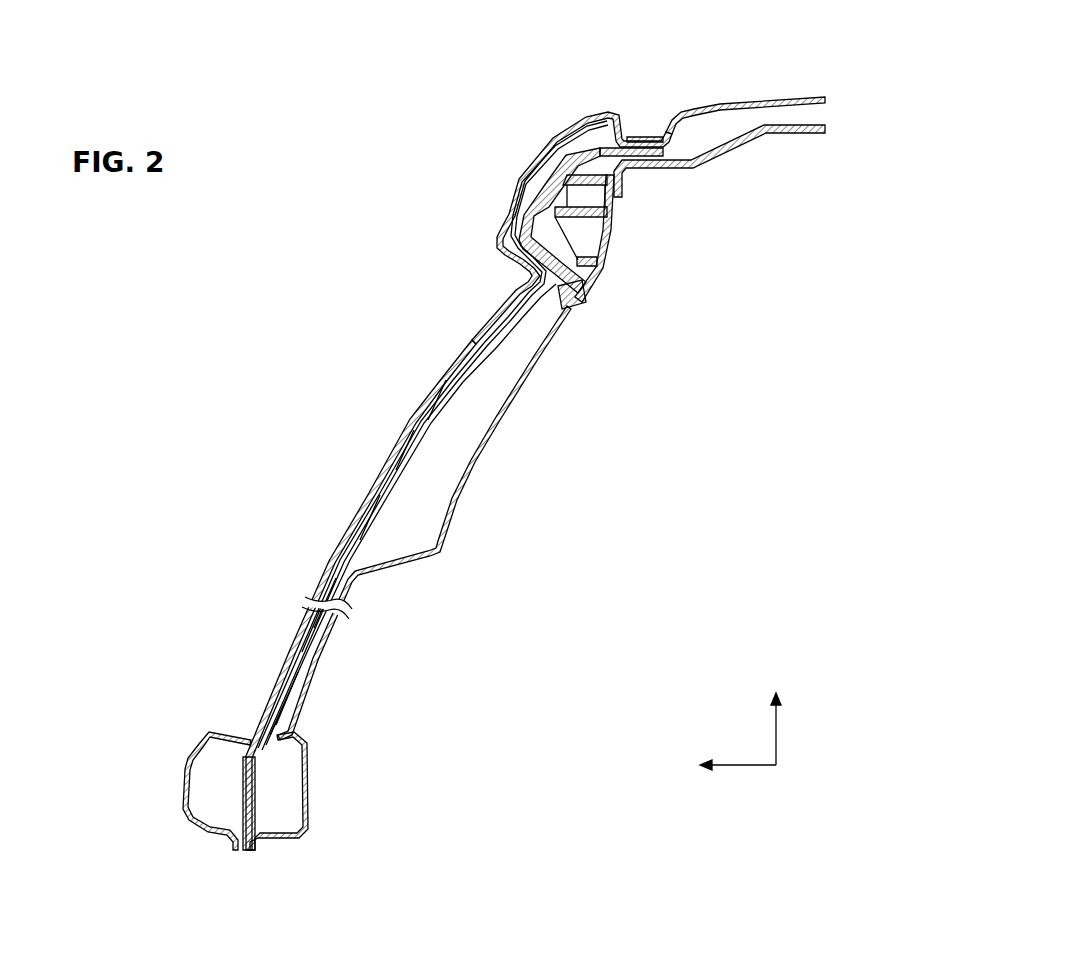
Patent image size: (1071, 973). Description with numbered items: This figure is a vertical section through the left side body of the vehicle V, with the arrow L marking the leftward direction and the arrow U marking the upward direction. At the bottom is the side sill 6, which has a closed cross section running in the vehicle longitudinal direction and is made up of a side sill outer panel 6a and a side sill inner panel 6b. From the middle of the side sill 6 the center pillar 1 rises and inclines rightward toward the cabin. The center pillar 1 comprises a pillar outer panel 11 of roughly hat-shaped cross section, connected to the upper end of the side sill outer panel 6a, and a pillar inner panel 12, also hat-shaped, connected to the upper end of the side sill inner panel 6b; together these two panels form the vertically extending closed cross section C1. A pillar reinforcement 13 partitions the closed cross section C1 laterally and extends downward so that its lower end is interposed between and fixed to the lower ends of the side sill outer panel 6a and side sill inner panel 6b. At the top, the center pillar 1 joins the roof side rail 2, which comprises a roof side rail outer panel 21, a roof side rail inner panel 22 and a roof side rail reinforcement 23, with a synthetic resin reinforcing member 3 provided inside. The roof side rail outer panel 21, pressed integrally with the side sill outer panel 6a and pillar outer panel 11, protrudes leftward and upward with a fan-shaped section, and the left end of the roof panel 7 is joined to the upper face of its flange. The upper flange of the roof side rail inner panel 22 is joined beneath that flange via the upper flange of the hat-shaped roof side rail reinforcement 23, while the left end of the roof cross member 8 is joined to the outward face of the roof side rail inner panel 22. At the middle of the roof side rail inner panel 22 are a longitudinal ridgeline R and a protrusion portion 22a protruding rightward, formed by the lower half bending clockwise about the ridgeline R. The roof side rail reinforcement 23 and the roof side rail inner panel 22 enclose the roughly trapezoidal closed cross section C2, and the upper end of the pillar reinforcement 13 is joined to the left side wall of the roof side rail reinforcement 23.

The center pillar 1 is at (425, 485).
The pillar outer panel 11 is at (357, 519).
The pillar inner panel 12 is at (458, 524).
The pillar reinforcement 13 is at (466, 386).
The roof side rail 2 is at (522, 176).
The roof side rail outer panel 21 is at (513, 205).
The roof side rail inner panel 22 is at (614, 218).
The protrusion portion 22a is at (604, 262).
The roof side rail reinforcement 23 is at (588, 148).
The reinforcing member 3 is at (550, 160).
The side sill 6 is at (243, 773).
The side sill outer panel 6a is at (188, 784).
The side sill inner panel 6b is at (304, 774).
The roof panel 7 is at (773, 103).
The roof cross member 8 is at (774, 134).
The closed cross section C1 is at (458, 463).
The closed cross section C2 is at (535, 226).
The ridgeline R is at (607, 246).
The vehicle V is at (462, 89).
The arrow L is at (733, 765).
The arrow U is at (777, 728).